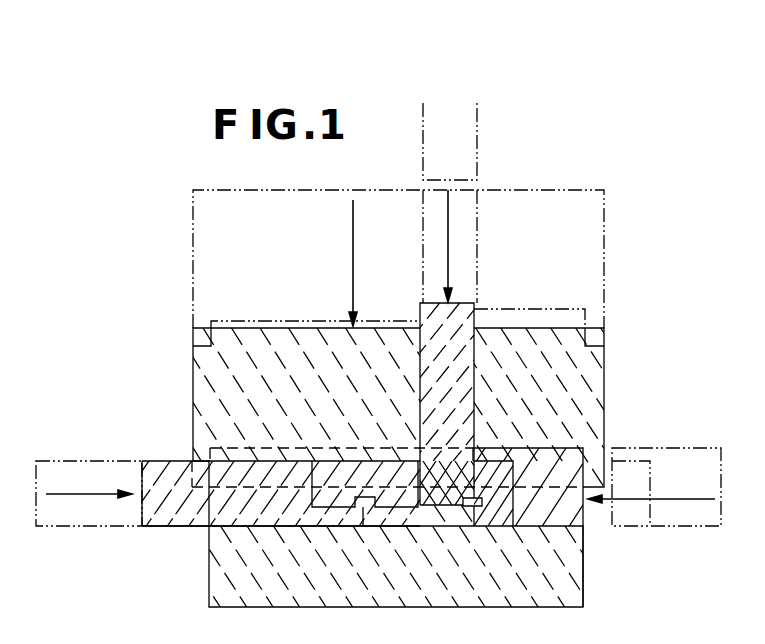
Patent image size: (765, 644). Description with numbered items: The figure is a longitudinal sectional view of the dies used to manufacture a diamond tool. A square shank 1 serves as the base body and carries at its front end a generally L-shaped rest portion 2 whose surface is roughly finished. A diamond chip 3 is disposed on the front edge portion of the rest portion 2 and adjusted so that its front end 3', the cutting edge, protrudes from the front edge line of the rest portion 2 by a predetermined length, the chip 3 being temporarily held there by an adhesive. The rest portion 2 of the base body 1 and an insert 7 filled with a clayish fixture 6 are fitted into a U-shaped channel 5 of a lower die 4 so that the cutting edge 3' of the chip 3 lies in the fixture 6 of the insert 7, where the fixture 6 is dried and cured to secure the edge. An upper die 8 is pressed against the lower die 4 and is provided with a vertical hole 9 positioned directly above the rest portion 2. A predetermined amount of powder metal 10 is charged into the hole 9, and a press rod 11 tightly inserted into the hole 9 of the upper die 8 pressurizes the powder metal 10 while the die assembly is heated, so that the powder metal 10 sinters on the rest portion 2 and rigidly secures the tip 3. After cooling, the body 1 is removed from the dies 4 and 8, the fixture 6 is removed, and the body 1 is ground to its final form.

The square shank 1 is at (150, 527).
The rest portion 2 is at (430, 504).
The diamond chip 3 is at (466, 532).
The front end of the chip 3' is at (488, 514).
The lower die 4 is at (212, 580).
The U-shaped channel 5 is at (320, 527).
The clayish fixture 6 is at (506, 525).
The insert 7 is at (578, 518).
The upper die 8 is at (600, 252).
The vertical hole 9 is at (467, 413).
The powder metal 10 is at (418, 464).
The press rod 11 is at (477, 149).